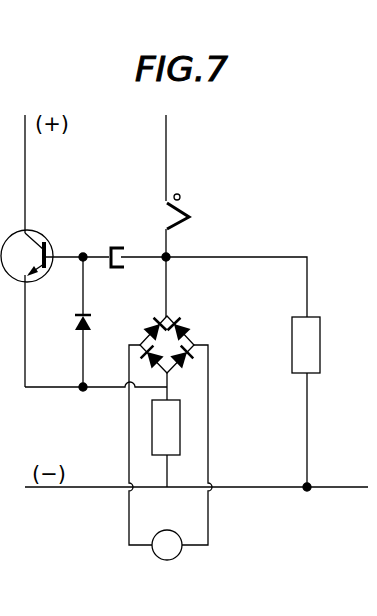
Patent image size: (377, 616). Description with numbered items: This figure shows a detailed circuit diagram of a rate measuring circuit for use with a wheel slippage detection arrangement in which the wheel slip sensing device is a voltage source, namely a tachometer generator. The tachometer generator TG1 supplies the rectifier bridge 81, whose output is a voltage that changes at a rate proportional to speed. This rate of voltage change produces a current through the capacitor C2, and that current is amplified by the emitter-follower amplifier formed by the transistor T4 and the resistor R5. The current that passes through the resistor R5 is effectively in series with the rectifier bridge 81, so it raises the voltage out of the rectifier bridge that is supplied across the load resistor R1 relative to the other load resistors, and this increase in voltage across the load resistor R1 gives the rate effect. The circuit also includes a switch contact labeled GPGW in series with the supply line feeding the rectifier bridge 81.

The rectifier bridge 81 is at (181, 322).
The emitter-follower amplifier transistor T4 is at (41, 232).
The capacitor C2 is at (113, 247).
The load resistor R1 is at (306, 345).
The emitter-follower amplifier resistor R5 is at (166, 427).
The switch GPGW is at (209, 211).
The tachometer generator No. 1 TG1 is at (160, 541).